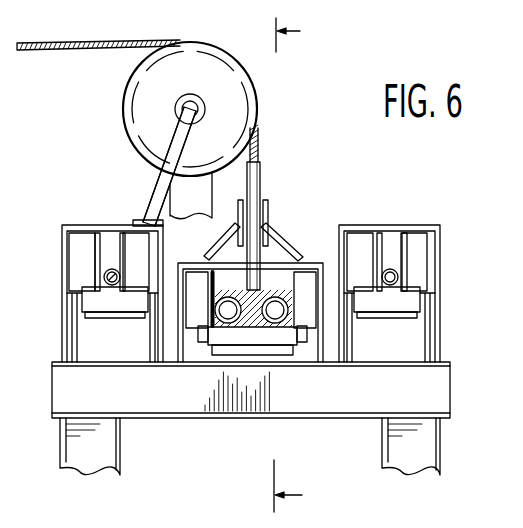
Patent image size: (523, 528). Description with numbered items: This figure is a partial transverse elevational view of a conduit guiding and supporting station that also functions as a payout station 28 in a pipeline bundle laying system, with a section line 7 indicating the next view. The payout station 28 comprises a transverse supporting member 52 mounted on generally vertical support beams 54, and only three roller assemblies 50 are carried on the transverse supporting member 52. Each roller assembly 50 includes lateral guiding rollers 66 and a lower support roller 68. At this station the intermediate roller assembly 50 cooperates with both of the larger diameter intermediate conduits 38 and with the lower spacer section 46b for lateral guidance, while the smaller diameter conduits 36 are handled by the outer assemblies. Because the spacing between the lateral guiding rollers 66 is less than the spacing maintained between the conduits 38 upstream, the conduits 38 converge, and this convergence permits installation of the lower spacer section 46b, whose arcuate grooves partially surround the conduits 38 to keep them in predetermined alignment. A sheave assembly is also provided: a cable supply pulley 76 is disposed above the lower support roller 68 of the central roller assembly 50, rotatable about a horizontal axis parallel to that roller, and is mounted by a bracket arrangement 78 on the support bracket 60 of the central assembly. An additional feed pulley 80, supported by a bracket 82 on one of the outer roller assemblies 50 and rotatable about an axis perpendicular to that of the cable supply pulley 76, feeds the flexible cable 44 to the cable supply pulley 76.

The section line 7- 7 is at (298, 265).
The payout station 28 is at (312, 172).
The conduit 36 is at (100, 284).
The conduit 38 is at (259, 300).
The flexible cable 44 is at (92, 50).
The lower spacer section 46b is at (236, 300).
The roller assembly 50 is at (114, 223).
The transverse supporting member 52 is at (170, 393).
The vertical support beam 54 is at (108, 453).
The support bracket 60 is at (322, 265).
The lateral guiding roller 66 is at (91, 270).
The lower support roller 68 is at (127, 309).
The cable supply pulley 76 is at (262, 180).
The bracket arrangement 78 is at (204, 250).
The feed pulley 80 is at (232, 100).
The bracket 82 is at (147, 198).